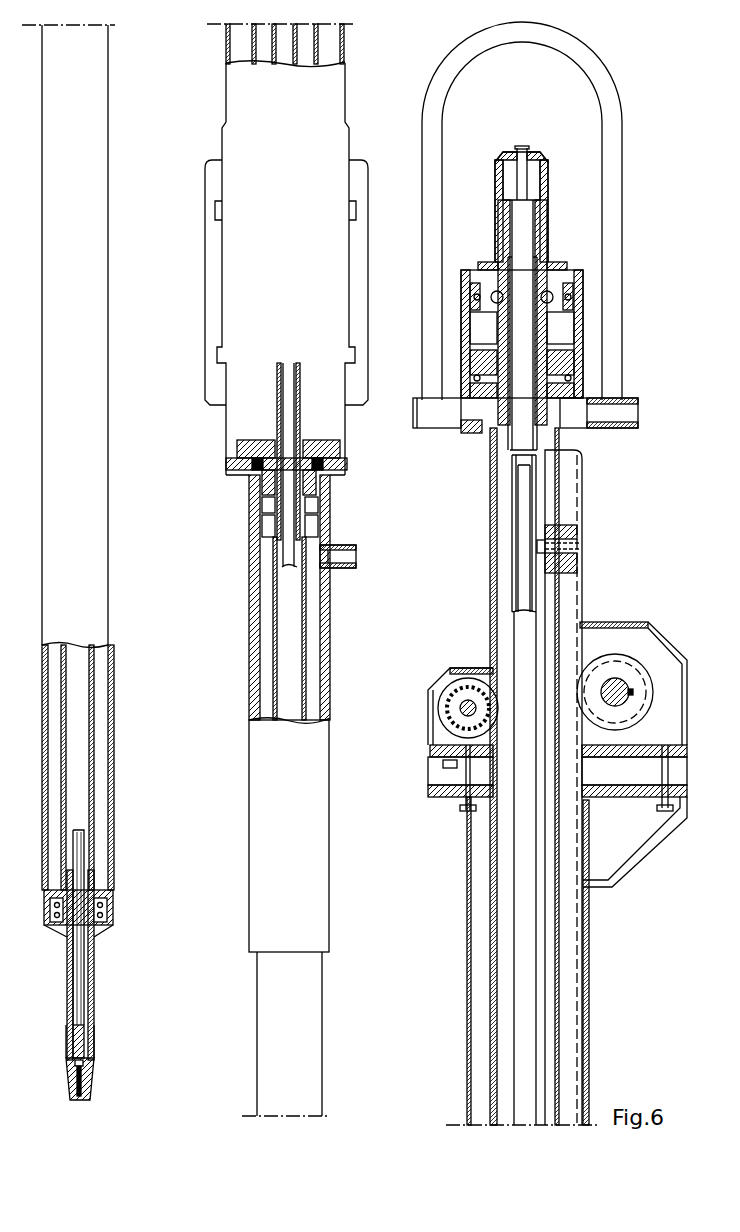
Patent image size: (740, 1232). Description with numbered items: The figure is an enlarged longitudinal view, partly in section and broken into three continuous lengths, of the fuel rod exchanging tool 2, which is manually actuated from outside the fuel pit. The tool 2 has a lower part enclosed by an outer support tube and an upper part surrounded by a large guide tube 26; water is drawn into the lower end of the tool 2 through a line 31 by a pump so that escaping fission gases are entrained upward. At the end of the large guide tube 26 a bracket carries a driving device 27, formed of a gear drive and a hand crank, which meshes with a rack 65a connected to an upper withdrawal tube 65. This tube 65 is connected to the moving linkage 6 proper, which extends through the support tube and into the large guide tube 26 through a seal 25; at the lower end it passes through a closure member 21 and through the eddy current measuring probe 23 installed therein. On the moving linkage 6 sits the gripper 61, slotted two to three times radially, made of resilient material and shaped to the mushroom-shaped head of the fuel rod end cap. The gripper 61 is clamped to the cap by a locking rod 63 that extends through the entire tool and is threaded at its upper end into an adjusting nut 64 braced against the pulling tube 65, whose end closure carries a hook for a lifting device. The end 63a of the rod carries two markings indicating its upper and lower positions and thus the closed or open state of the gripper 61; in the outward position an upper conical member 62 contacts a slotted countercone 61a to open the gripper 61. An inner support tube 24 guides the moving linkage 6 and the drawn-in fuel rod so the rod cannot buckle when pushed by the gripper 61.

The fuel rod exchanging tool 2 is at (188, 710).
The moving linkage 6 is at (94, 952).
The closure member 21 is at (106, 906).
The eddy current measuring probe 23 is at (103, 917).
The inner support tube 24 is at (93, 672).
The seal 25 is at (322, 484).
The large guide tube 26 is at (346, 43).
The driving device 27 is at (655, 688).
The line 31 is at (343, 545).
The gripper 61 is at (94, 1084).
The countercone 61a is at (90, 1037).
The conical member 62 is at (72, 1046).
The locking rod 63 is at (80, 845).
The rod end 63a is at (524, 186).
The adjusting nut 64 is at (546, 216).
The withdrawal tube 65 is at (250, 40).
The rack 65a is at (578, 531).